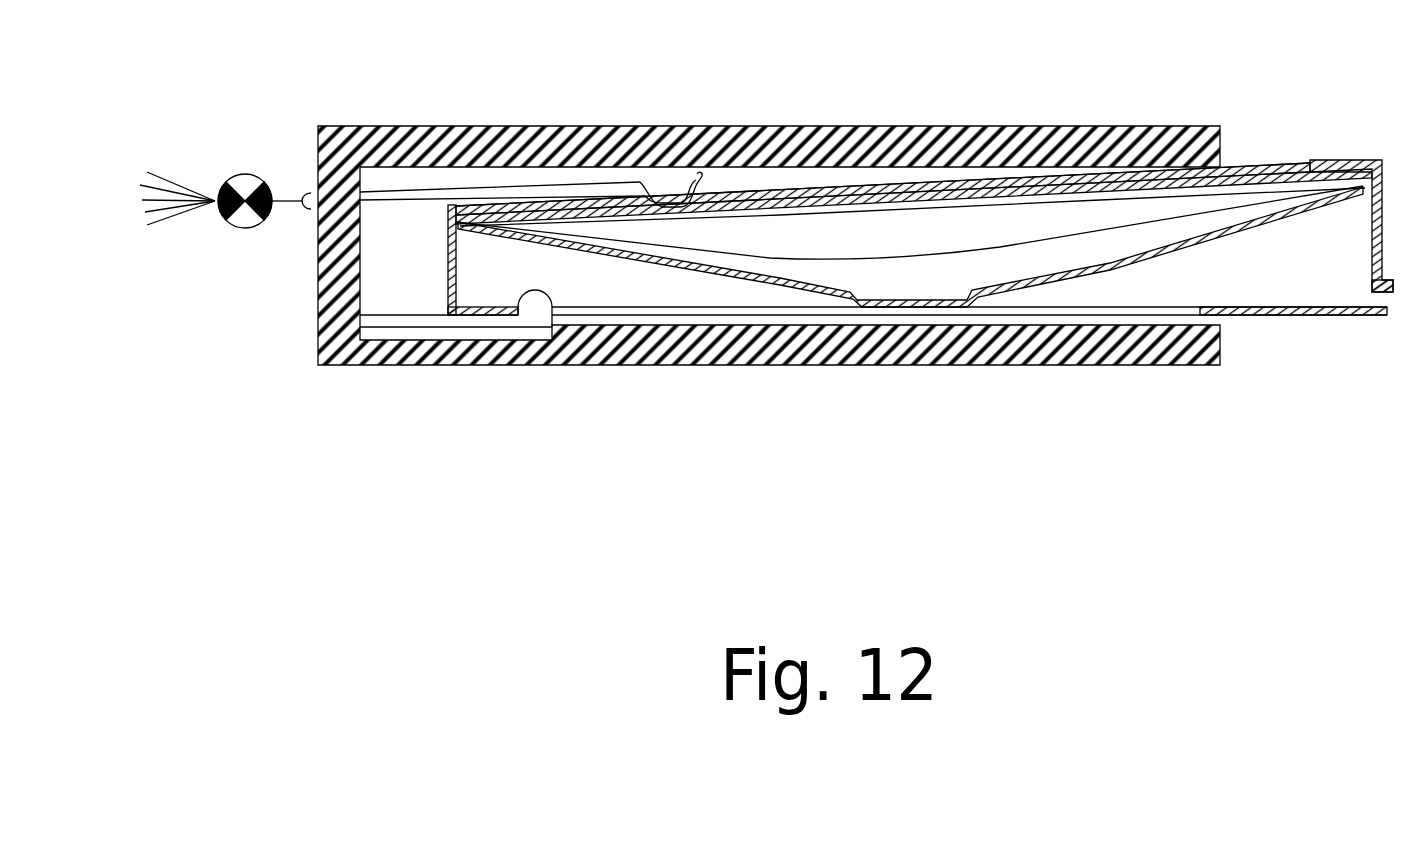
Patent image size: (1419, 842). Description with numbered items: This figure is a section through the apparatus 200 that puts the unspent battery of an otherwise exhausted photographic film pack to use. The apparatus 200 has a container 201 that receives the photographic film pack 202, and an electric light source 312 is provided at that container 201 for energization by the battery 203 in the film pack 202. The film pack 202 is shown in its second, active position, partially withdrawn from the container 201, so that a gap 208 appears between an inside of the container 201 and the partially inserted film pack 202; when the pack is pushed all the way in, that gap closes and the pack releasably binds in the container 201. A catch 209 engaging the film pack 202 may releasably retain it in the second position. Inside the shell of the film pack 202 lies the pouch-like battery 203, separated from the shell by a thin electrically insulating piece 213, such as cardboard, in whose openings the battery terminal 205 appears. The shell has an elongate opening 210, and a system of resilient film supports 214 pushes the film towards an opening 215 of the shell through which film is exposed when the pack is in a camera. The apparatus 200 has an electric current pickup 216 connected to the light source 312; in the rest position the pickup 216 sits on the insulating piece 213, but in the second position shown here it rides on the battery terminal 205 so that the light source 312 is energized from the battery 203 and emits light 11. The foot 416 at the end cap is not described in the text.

The light 11 is at (177, 177).
The electric light source 312 is at (253, 176).
The apparatus 200 is at (1136, 111).
The container 201 is at (963, 366).
The photographic film pack 202 is at (1357, 158).
The battery 203 is at (832, 239).
The battery output terminal 205 is at (727, 197).
The gap 208 is at (1232, 167).
The catch 209 is at (537, 313).
The elongate opening 210 is at (802, 192).
The electrically insulating piece 213 is at (758, 190).
The resilient film supports 214 is at (1060, 280).
The opening 215 is at (1160, 315).
The electric current pickup 216 is at (651, 180).
The foot 416 is at (1393, 300).